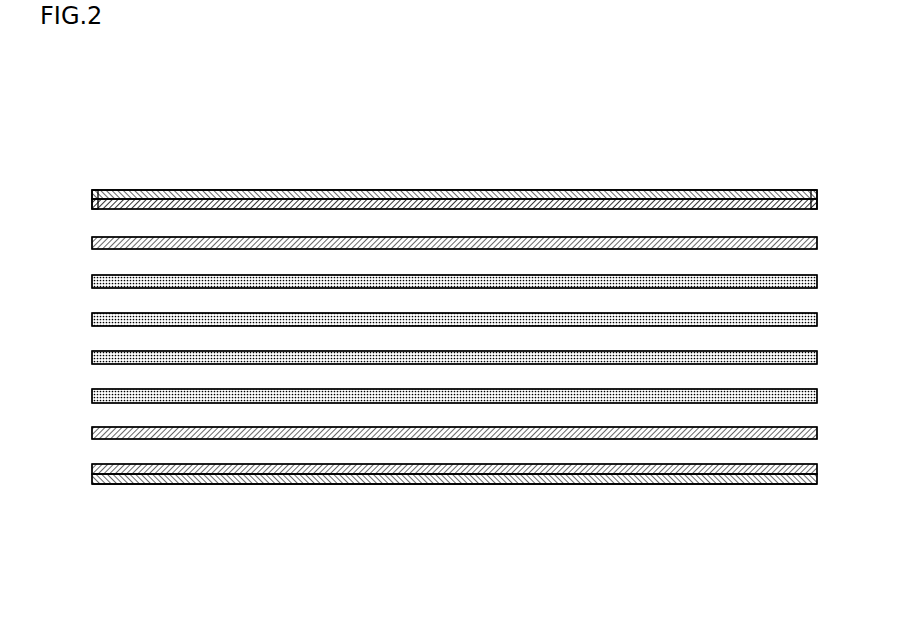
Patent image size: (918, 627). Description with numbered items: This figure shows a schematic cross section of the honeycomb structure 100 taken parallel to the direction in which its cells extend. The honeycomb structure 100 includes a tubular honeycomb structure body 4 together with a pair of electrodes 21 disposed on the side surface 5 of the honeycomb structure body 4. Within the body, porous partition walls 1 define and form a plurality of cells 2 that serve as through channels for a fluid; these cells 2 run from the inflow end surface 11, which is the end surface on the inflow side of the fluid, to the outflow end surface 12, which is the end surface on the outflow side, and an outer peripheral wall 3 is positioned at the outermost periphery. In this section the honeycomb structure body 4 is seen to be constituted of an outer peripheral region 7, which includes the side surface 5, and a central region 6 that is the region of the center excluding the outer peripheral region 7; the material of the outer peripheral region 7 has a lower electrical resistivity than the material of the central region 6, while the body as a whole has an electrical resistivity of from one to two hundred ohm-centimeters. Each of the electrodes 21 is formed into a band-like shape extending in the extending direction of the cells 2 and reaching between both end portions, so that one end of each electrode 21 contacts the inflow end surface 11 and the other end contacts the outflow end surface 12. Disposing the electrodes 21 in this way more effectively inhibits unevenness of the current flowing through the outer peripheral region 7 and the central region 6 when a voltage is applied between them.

The honeycomb structure 100 is at (828, 80).
The partition walls 1 is at (420, 440).
The cells 2 is at (150, 263).
The outer peripheral wall 3 is at (564, 483).
The honeycomb structure body 4 is at (207, 197).
The side surface 5 is at (670, 478).
The central region 6 is at (251, 275).
The outer peripheral region 7 is at (517, 191).
The inflow end surface 11 is at (92, 201).
The outflow end surface 12 is at (817, 203).
The electrodes 21 is at (352, 191).